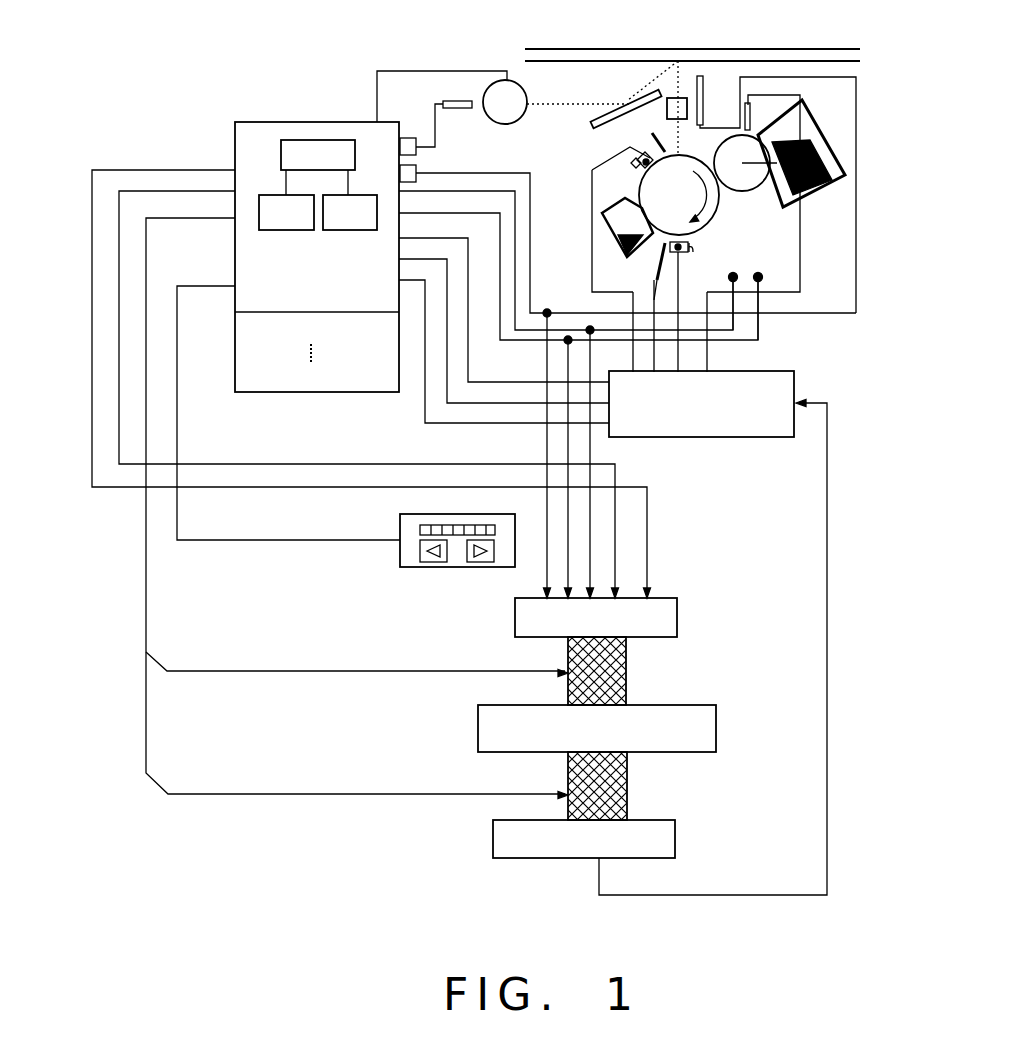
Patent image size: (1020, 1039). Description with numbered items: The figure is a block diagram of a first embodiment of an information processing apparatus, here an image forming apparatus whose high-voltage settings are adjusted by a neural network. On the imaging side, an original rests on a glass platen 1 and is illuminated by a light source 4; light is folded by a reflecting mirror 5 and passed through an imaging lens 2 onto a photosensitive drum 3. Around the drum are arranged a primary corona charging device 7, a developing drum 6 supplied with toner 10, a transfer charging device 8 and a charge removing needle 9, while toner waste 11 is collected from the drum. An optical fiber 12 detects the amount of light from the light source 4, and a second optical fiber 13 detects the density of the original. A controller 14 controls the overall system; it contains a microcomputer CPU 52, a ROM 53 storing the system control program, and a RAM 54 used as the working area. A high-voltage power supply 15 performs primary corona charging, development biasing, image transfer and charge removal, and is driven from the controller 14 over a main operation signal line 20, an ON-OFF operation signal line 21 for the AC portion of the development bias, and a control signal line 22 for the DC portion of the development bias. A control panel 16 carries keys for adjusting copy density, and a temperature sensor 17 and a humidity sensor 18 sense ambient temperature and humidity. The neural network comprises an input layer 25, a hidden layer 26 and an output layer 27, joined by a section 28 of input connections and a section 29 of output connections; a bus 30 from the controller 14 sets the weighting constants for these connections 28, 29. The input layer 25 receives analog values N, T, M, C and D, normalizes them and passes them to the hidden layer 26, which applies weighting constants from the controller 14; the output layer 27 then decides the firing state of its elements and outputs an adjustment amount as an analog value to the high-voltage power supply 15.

The glass platen 1 is at (755, 52).
The imaging lens 2 is at (667, 112).
The photosensitive drum 3 is at (715, 210).
The light source 4 is at (507, 123).
The reflecting mirror 5 is at (590, 121).
The developing drum 6 is at (742, 191).
The primary corona charging device 7 is at (642, 165).
The transfer charging device 8 is at (686, 265).
The charge removing needle 9 is at (658, 262).
The toner 10 is at (806, 140).
The toner waste 11 is at (622, 245).
The optical fiber 12 is at (470, 105).
The optical fiber 13 is at (730, 98).
The controller 14 is at (297, 235).
The high-voltage power supply 15 is at (682, 437).
The control panel 16 is at (423, 567).
The temperature sensor 17 is at (735, 273).
The humidity sensor 18 is at (760, 276).
The main operation signal line 20 is at (527, 364).
The ON-OFF operation signal line 21 is at (442, 392).
The control signal line 22 is at (483, 424).
The input layer 25 is at (662, 598).
The hidden layer 26 is at (717, 740).
The output layer 27 is at (676, 843).
The section for the input connections 28 is at (628, 672).
The section for the output connections 29 is at (628, 800).
The bus 30 is at (178, 650).
The CPU 52 is at (281, 148).
The ROM 53 is at (259, 222).
The RAM 54 is at (366, 195).